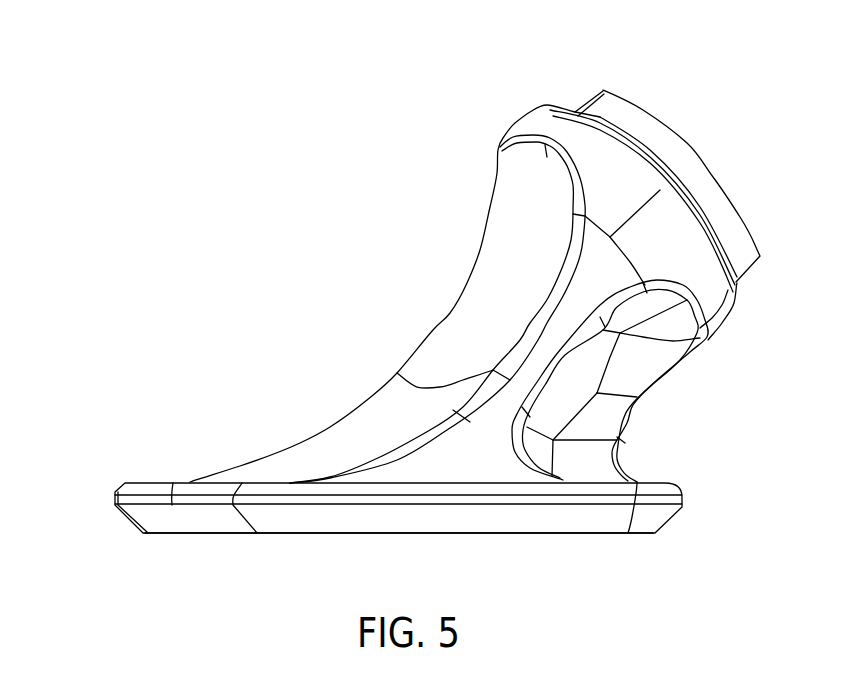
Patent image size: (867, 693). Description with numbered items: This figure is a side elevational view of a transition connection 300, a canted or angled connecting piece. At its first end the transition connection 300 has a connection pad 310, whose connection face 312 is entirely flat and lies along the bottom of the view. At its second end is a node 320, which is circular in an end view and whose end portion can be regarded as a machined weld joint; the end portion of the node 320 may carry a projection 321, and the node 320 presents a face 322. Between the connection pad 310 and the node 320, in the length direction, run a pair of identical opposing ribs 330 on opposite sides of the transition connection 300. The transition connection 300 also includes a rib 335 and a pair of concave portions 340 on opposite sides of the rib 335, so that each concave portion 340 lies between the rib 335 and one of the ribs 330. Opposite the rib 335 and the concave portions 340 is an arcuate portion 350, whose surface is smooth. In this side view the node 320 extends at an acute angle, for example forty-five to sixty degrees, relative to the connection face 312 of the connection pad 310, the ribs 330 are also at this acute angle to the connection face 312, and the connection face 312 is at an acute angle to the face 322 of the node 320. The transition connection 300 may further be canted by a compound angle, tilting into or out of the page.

The transition connection 300 is at (205, 200).
The connection pad 310 is at (132, 493).
The connection face 312 is at (540, 533).
The node 320 is at (737, 296).
The projection 321 is at (597, 88).
The face of the node 322 is at (709, 160).
The ribs 330 is at (575, 325).
The rib 335 is at (650, 393).
The concave portions 340 is at (643, 355).
The arcuate portion 350 is at (382, 413).